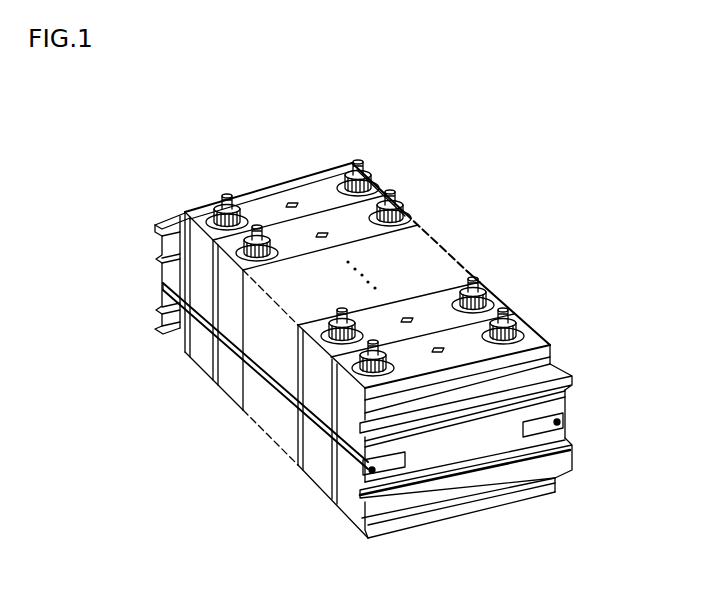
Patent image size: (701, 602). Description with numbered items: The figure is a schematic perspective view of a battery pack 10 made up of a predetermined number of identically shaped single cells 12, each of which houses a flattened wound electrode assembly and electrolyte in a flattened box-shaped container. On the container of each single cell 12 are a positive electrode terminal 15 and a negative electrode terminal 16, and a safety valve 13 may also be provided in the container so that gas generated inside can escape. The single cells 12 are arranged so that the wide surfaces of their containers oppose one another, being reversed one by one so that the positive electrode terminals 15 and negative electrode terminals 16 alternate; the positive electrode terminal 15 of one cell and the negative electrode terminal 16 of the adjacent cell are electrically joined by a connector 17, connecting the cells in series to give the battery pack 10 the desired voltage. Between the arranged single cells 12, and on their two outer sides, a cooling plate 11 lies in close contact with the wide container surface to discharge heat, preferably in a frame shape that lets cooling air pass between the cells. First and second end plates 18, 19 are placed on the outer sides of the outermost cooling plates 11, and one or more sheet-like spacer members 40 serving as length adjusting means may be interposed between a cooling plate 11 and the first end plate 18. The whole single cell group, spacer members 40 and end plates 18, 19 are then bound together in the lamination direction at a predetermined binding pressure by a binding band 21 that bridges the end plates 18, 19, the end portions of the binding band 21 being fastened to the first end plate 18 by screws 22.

The battery pack 10 is at (584, 177).
The cooling plate 11 is at (547, 322).
The single cell 12 is at (343, 228).
The safety valve 13 is at (292, 200).
The positive electrode terminal 15 is at (223, 190).
The negative electrode terminal 16 is at (257, 225).
The connector 17 is at (247, 216).
The first end plate 18 is at (565, 373).
The second end plate 19 is at (155, 228).
The binding band 21 is at (323, 433).
The screw 22 is at (563, 417).
The spacer member 40 is at (547, 360).